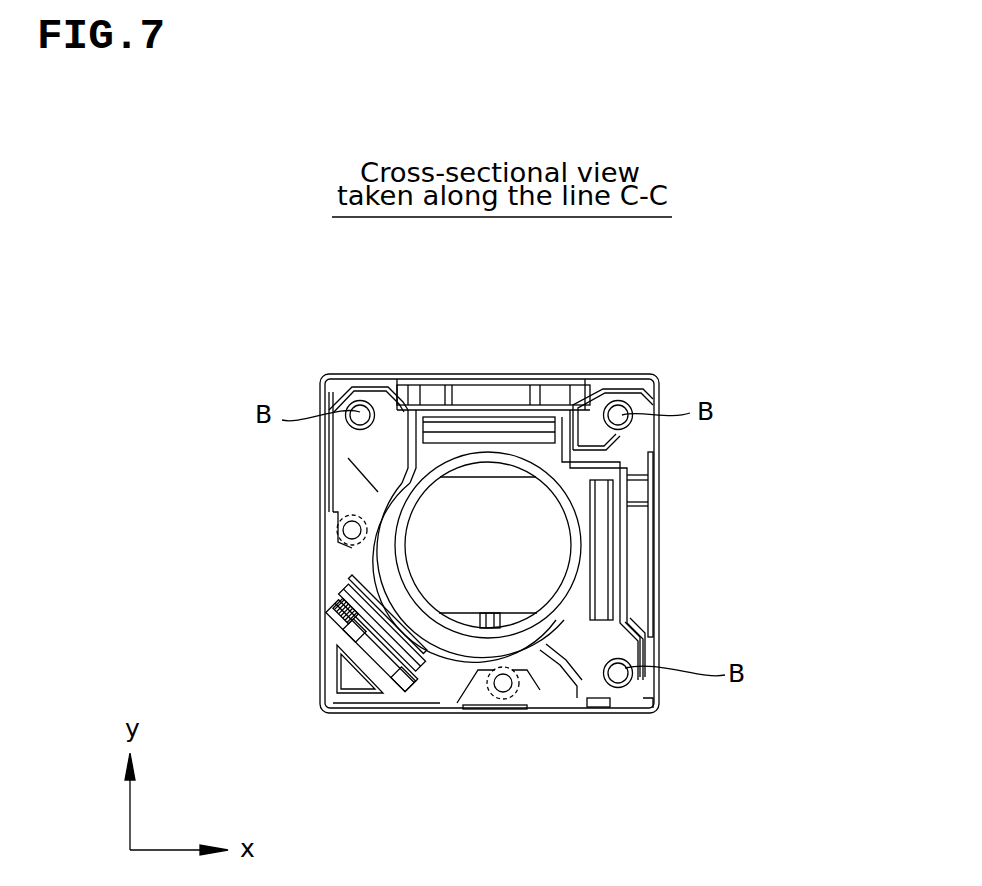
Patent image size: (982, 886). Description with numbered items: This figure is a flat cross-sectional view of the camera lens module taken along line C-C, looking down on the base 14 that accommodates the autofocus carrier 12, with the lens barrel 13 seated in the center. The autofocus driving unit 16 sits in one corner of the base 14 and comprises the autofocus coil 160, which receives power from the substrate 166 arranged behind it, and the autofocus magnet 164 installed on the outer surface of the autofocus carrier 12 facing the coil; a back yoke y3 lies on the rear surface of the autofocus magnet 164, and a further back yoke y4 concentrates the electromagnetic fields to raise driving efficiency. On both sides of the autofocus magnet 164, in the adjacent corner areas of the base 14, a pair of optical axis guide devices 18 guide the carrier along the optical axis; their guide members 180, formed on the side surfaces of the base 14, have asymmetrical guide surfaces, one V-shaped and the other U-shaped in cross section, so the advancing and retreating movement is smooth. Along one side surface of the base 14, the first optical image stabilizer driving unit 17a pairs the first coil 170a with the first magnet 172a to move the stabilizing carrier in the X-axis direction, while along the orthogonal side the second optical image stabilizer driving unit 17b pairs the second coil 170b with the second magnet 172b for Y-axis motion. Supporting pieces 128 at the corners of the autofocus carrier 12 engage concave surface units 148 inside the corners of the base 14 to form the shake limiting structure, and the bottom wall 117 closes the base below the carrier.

The autofocus carrier 12 is at (478, 703).
The lens barrel 13 is at (580, 520).
The base 14 is at (357, 714).
The autofocus driving unit 16 is at (300, 663).
The first optical image stabilizer driving unit 17a is at (712, 544).
The second optical image stabilizer driving unit 17b is at (501, 368).
The optical axis guide device 18 is at (330, 525).
The housing bottom wall 117 is at (392, 704).
The supporting piece 128 is at (348, 430).
The concave surface unit 148 is at (367, 380).
The autofocus coil 160 is at (365, 634).
The autofocus magnet 164 is at (352, 592).
The substrate 166 is at (370, 665).
The first coil 170a is at (640, 557).
The second coil 170b is at (480, 380).
The first magnet 172a is at (612, 596).
The second magnet 172b is at (560, 380).
The guide member 180 is at (340, 540).
The back yoke y3 is at (360, 563).
The back yoke y4 is at (385, 655).